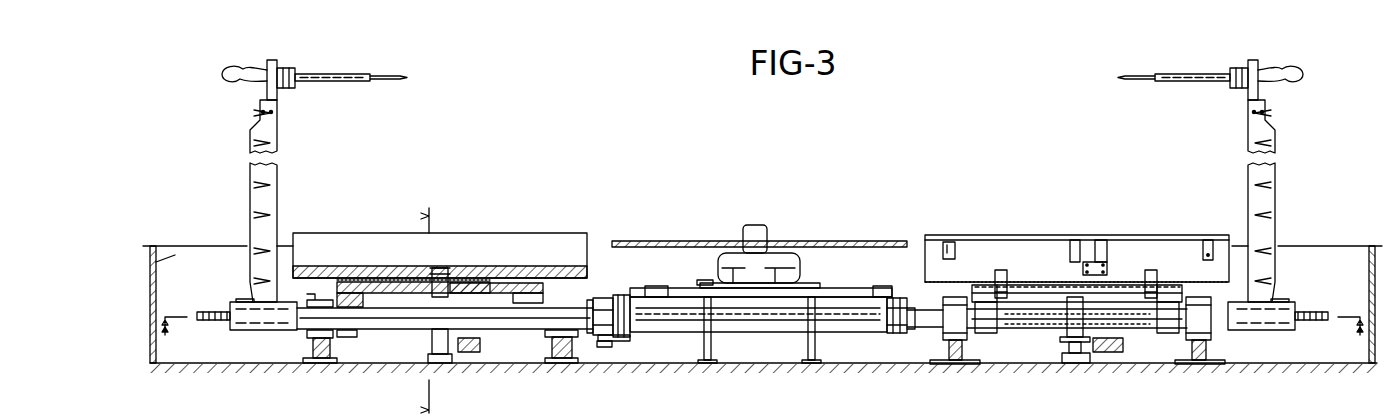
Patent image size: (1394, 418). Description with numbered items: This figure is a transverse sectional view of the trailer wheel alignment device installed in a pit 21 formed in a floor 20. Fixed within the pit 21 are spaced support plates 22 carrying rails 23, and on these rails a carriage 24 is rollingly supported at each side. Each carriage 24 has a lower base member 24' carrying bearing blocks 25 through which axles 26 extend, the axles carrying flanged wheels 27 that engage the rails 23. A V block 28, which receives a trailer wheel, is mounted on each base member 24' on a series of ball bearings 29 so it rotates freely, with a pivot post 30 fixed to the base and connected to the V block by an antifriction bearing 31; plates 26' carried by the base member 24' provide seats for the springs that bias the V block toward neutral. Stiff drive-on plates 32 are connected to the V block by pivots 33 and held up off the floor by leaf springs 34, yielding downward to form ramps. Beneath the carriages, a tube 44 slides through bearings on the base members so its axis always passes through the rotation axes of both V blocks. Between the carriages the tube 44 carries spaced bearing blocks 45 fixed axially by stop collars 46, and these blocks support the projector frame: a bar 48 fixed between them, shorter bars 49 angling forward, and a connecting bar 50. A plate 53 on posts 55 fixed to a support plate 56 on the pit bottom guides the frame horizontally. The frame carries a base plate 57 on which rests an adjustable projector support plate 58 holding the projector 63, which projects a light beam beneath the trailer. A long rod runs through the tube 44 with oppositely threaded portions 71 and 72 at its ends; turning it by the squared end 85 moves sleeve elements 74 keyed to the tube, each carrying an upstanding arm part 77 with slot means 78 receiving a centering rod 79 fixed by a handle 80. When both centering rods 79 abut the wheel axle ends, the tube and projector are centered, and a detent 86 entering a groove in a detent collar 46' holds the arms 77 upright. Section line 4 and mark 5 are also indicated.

The section line 4 is at (416, 309).
The section line 5 is at (761, 305).
The floor 20 is at (152, 246).
The pit 21 is at (160, 262).
The support plates 22 is at (300, 363).
The rails 23 is at (340, 338).
The carriage 24 is at (780, 218).
The lower base member 24' is at (737, 300).
The bearing blocks 25 is at (480, 331).
The axles 26 is at (1077, 349).
The plates 26' is at (1057, 268).
The flanged wheels 27 is at (320, 363).
The V block 28 is at (525, 241).
The ball bearings 29 is at (352, 282).
The pivot post 30 is at (448, 273).
The antifriction bearing 31 is at (432, 279).
The drive-on plate 32 is at (950, 242).
The pivots 33 is at (1208, 241).
The leaf springs 34 is at (1100, 241).
The tube 44 is at (392, 331).
The bearing blocks 45 is at (622, 295).
The stop collars 46 is at (748, 293).
The detent collar 46' is at (636, 368).
The bar 48 is at (700, 312).
The shorter bars 49 is at (650, 286).
The bar 50 is at (700, 280).
The plate 53 is at (802, 261).
The posts 55 is at (712, 350).
The support plate 56 is at (816, 362).
The base plate 57 is at (733, 283).
The projector support plate 58 is at (772, 283).
The projector 63 is at (790, 302).
The threaded portion 71 is at (214, 311).
The threaded portion 72 is at (1311, 314).
The sleeve element 74 is at (248, 331).
The arm part 77 is at (278, 182).
The slot means 78 is at (279, 104).
The centering rod 79 is at (362, 75).
The handle 80 is at (232, 73).
The squared end 85 is at (200, 320).
The detent 86 is at (606, 350).